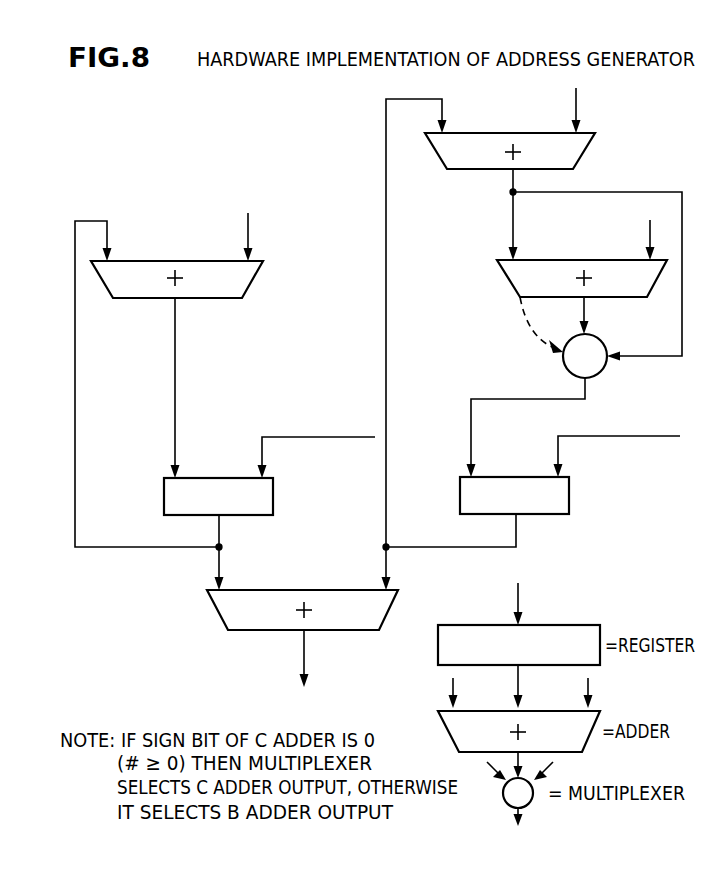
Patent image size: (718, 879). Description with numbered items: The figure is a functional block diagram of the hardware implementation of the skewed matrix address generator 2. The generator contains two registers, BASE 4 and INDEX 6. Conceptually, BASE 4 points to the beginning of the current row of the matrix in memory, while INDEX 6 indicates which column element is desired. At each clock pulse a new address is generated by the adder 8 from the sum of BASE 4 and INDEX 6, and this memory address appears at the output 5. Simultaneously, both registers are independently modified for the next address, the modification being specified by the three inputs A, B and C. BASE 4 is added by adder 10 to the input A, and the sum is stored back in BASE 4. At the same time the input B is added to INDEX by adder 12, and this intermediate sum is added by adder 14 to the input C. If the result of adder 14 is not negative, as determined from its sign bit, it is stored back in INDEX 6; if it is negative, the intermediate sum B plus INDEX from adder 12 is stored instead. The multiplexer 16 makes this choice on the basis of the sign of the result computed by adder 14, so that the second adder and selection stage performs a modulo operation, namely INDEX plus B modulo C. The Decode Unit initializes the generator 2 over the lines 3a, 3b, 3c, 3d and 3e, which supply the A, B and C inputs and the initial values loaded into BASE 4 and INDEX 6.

The address generator 2 is at (325, 547).
The initialization line 3a is at (250, 232).
The initialization line 3b is at (578, 109).
The initialization line 3c is at (648, 233).
The initialization line 3d is at (260, 449).
The initialization line 3e is at (556, 450).
The BASE register 4 is at (165, 490).
The memory address output 5 is at (306, 660).
The INDEX register 6 is at (560, 510).
The adder 8 is at (225, 610).
The adder 10 is at (252, 272).
The adder 12 is at (580, 150).
The adder 14 is at (512, 277).
The multiplexer 16 is at (600, 367).